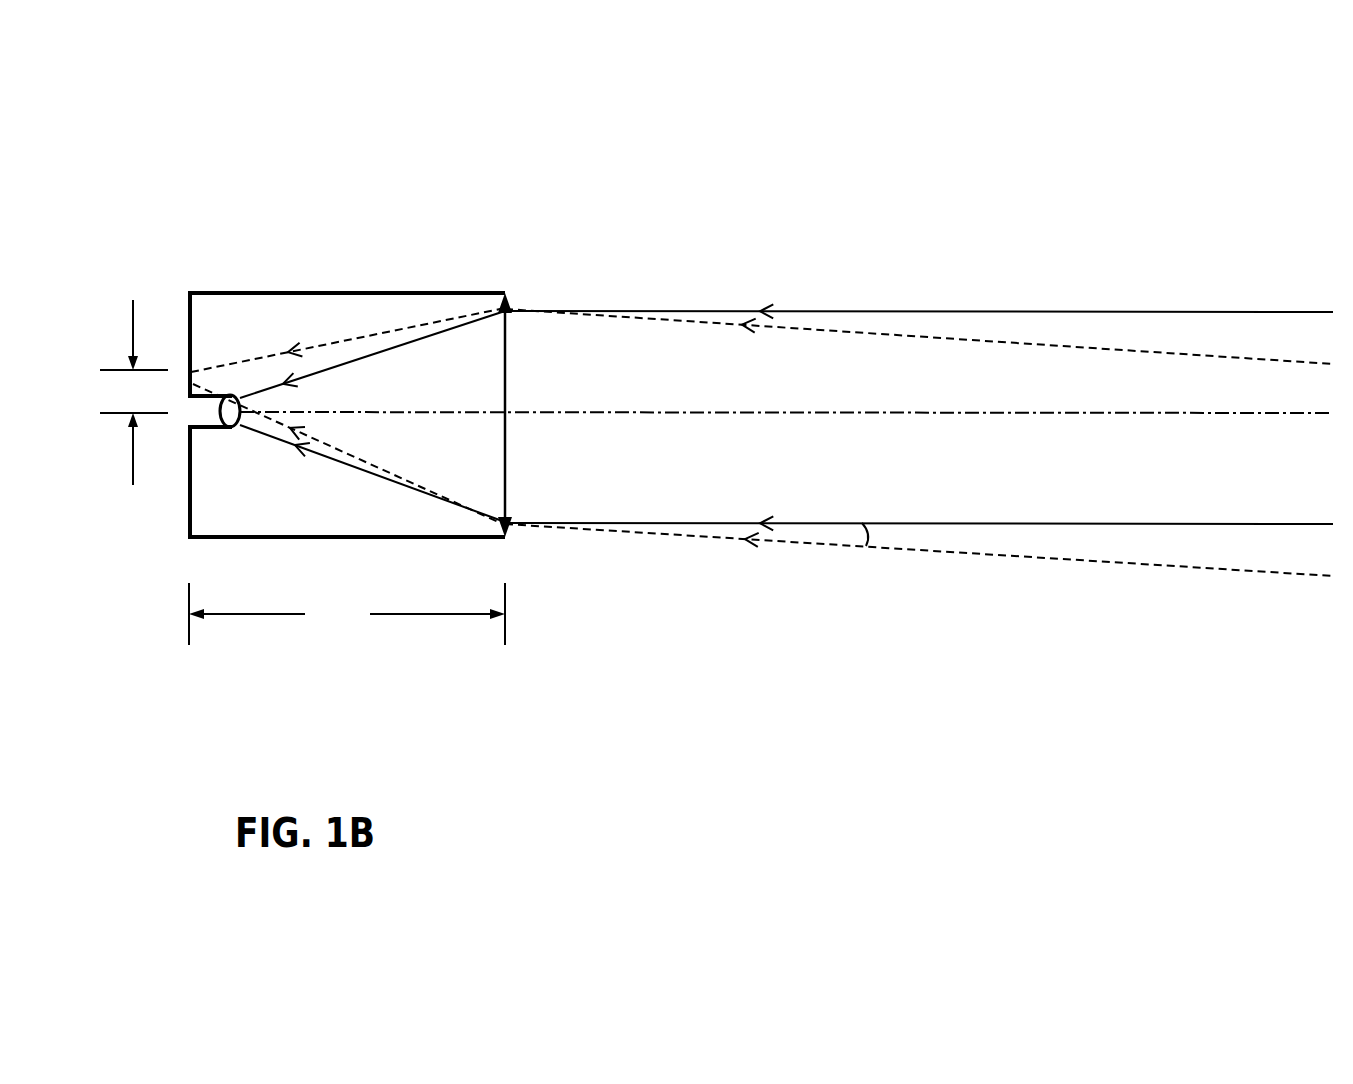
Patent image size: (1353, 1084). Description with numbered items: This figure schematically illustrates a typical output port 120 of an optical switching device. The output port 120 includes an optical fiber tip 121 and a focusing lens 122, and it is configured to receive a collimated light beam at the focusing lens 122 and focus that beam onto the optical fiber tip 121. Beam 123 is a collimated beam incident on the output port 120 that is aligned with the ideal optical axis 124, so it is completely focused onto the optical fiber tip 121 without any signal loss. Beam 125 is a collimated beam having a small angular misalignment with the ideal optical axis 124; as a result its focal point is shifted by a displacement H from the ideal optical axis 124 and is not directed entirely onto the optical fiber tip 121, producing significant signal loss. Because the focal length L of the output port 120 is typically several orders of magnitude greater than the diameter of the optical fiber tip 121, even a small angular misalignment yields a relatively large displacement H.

The output port 120 is at (421, 226).
The optical fiber tip 121 is at (240, 456).
The focusing lens 122 is at (507, 460).
The beam 123 is at (810, 310).
The ideal optical axis 124 is at (968, 413).
The beam 125 is at (1110, 562).
The displacement H is at (133, 328).
The focal length L is at (347, 614).